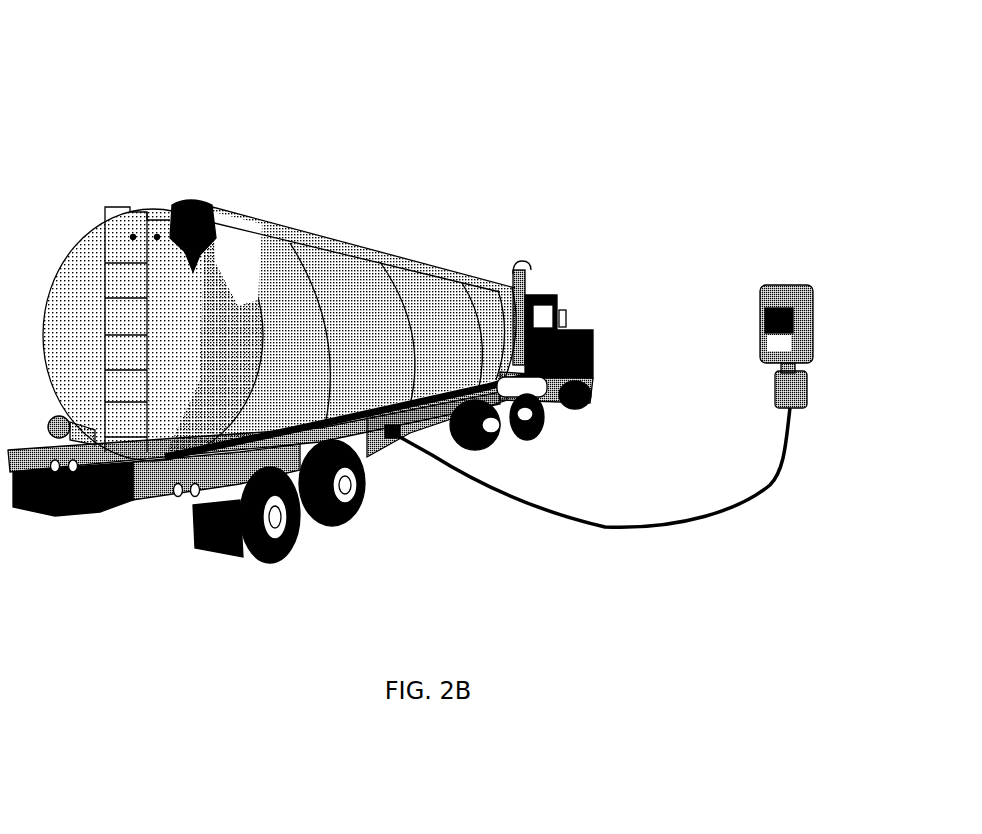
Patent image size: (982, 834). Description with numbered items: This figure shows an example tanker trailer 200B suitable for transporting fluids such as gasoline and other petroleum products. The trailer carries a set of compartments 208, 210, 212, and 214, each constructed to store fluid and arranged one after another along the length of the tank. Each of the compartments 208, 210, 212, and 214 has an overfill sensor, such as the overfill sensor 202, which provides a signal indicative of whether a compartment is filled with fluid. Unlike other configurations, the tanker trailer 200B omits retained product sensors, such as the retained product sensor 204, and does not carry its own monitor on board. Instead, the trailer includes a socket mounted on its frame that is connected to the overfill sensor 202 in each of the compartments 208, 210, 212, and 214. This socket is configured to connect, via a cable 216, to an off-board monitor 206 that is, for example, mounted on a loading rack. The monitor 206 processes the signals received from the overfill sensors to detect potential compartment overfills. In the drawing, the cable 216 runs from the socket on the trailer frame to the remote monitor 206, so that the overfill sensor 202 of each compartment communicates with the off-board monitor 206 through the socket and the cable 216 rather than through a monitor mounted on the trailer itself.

The tanker trailer 200B is at (770, 76).
The overfill sensor 202 is at (188, 203).
The retained product sensor 204 is at (395, 442).
The monitor 206 is at (816, 327).
The compartment 208 is at (492, 316).
The compartment 210 is at (428, 302).
The compartment 212 is at (336, 276).
The compartment 214 is at (252, 258).
The cable 216 is at (602, 528).